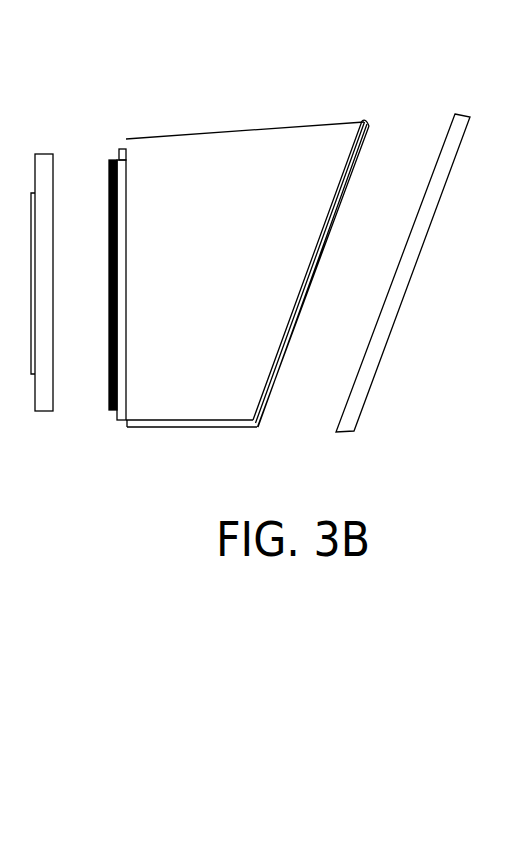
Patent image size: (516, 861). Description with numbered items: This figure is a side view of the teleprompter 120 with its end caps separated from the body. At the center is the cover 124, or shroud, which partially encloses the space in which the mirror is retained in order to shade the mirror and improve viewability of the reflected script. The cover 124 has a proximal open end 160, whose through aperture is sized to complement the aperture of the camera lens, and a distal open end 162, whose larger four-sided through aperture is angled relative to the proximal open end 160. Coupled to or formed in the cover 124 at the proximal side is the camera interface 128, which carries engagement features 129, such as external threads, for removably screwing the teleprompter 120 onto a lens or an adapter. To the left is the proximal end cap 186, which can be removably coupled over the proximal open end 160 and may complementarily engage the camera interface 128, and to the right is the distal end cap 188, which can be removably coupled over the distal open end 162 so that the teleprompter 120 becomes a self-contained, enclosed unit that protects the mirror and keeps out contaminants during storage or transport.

The teleprompter 120 is at (303, 107).
The cover 124 is at (175, 172).
The camera interface 128 is at (108, 355).
The engagement features 129 is at (113, 190).
The proximal open end 160 is at (115, 407).
The distal open end 162 is at (355, 170).
The proximal end cap 186 is at (43, 187).
The distal end cap 188 is at (428, 192).